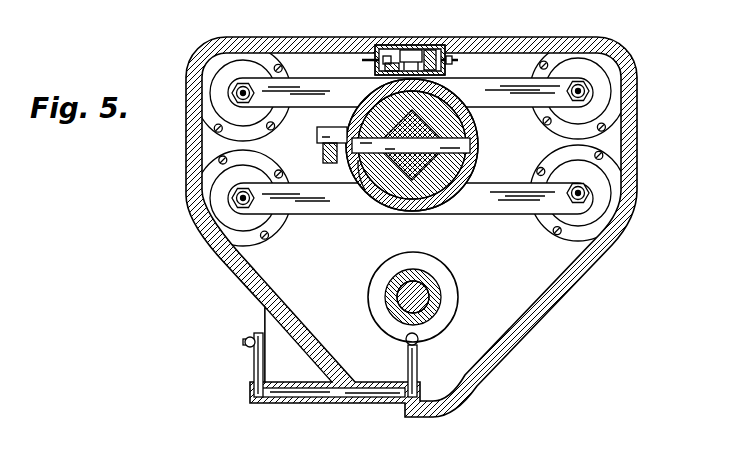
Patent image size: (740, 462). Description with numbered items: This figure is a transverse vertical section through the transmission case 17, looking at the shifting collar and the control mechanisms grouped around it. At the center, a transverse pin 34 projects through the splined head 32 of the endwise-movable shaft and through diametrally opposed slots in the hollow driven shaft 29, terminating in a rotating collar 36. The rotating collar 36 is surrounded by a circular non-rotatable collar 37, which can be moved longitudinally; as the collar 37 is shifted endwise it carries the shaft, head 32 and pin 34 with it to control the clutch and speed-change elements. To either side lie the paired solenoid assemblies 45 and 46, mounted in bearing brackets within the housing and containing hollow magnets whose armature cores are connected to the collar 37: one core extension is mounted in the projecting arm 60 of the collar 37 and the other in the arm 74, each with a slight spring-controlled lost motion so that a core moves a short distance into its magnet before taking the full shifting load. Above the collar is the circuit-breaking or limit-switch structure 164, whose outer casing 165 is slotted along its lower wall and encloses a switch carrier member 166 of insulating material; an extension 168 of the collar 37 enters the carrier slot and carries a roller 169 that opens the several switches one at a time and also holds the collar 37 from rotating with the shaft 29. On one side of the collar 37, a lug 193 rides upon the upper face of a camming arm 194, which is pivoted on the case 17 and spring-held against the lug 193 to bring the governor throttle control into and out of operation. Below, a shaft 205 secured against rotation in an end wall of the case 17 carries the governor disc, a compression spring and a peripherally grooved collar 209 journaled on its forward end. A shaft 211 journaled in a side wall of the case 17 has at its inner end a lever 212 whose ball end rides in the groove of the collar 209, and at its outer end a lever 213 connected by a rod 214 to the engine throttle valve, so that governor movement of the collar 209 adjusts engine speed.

The transmission case 17 is at (548, 318).
The driven shaft 29 is at (368, 212).
The splined head 32 is at (428, 160).
The transverse pin 34 is at (470, 146).
The rotating collar 36 is at (466, 119).
The non-rotatable collar 37 is at (400, 213).
The solenoid assembly 45 is at (224, 82).
The solenoid assembly 46 is at (604, 91).
The projecting arm 60 is at (410, 159).
The arm 74 is at (516, 108).
The circuit-breaking or limit-switch structure 164 is at (411, 42).
The outer casing 165 is at (438, 49).
The switch carrier member 166 is at (392, 63).
The extension 168 is at (447, 65).
The roller 169 is at (411, 49).
The lug 193 is at (317, 135).
The camming arm 194 is at (323, 154).
The shaft 205 is at (438, 297).
The peripherally grooved collar 209 is at (446, 306).
The shaft 211 is at (332, 403).
The lever 212 is at (418, 366).
The lever 213 is at (256, 358).
The rod 214 is at (244, 342).